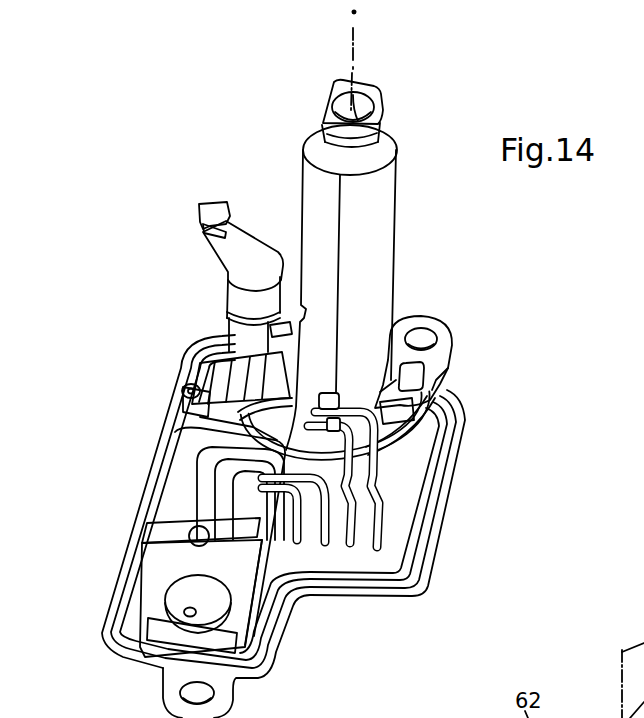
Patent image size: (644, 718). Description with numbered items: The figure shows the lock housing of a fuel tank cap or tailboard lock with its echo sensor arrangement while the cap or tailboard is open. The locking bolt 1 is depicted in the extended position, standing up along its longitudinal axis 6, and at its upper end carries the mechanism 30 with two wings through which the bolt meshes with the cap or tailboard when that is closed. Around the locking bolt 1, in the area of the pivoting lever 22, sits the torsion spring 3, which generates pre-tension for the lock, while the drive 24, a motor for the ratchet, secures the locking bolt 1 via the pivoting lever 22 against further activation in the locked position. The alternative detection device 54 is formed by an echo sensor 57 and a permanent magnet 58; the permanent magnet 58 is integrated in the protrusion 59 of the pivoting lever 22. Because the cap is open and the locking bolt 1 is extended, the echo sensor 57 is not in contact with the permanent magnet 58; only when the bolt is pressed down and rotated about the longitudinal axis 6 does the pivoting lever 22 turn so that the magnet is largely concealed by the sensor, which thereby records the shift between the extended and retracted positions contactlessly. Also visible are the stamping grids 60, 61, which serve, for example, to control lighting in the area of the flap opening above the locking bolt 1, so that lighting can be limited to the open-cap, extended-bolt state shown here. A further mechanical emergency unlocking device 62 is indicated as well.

The locking bolt 1 is at (381, 205).
The torsion spring 3 is at (403, 442).
The longitudinal axis 6 is at (352, 37).
The pivoting lever 22 is at (397, 363).
The drive 24 is at (178, 472).
The mechanism 30 is at (362, 100).
The detection device 54 is at (203, 385).
The echo sensor 57 is at (236, 384).
The permanent magnet 58 is at (408, 377).
The protrusion 59 is at (430, 380).
The stamping grid 60 is at (350, 548).
The stamping grid 61 is at (378, 552).
The mechanical emergency unlocking device 62 is at (252, 245).